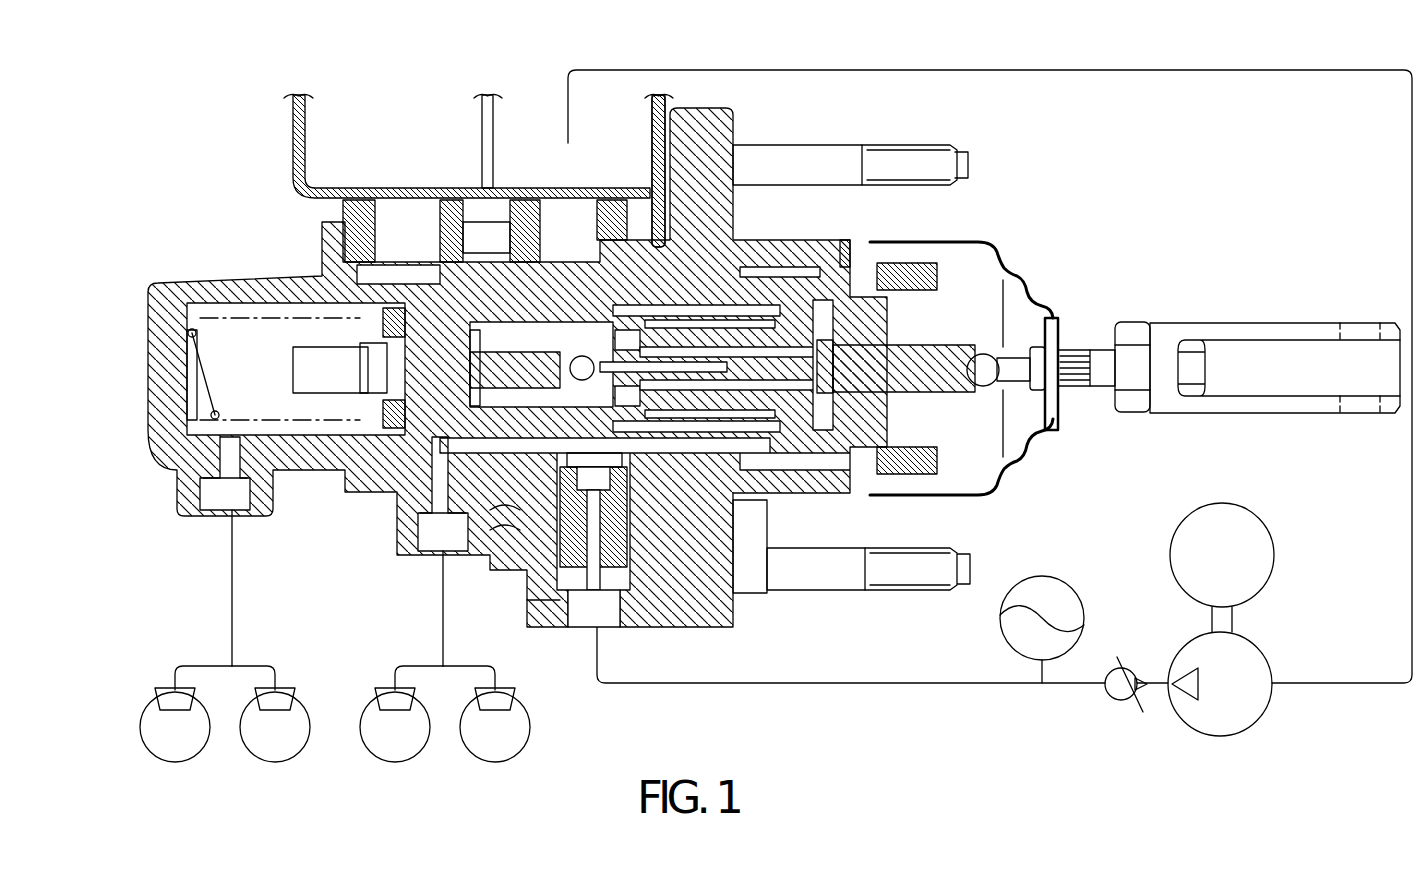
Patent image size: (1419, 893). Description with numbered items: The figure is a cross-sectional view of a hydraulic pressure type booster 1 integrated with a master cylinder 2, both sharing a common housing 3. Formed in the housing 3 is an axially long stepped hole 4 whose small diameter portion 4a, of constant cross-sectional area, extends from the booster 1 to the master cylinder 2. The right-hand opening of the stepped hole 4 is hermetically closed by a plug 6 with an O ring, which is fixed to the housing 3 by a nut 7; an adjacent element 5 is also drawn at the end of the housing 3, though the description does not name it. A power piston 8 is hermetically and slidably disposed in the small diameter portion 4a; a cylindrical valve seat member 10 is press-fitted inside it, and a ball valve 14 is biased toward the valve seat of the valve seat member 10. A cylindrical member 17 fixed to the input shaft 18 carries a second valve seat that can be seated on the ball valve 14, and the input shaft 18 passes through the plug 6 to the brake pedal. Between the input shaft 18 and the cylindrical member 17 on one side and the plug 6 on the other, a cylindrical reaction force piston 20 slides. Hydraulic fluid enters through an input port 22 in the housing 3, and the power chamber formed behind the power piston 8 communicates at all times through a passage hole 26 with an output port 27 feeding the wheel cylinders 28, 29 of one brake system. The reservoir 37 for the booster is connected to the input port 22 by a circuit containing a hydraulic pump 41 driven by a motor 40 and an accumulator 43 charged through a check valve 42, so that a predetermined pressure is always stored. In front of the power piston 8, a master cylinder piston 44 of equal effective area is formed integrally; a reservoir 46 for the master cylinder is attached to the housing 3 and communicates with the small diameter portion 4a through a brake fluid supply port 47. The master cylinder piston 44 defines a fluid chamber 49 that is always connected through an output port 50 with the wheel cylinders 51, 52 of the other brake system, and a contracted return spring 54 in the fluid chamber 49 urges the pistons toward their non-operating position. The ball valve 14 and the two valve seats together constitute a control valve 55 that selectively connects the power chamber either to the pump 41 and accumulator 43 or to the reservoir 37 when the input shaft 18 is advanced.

The hydraulic pressure type booster 1 is at (1032, 157).
The master cylinder 2 is at (300, 270).
The housing 3 is at (765, 260).
The stepped hole 4 is at (830, 486).
The small diameter portion 4a is at (505, 503).
The seal ring 5 is at (845, 268).
The plug 6 is at (880, 275).
The nut 7 is at (940, 482).
The power piston 8 is at (770, 305).
The valve seat member 10 is at (610, 308).
The ball valve 14 is at (583, 310).
The cylindrical member 17 is at (678, 580).
The input shaft 18 is at (970, 384).
The reaction force piston 20 is at (830, 310).
The input port 22 is at (605, 620).
The passage hole 26 is at (745, 470).
The output port 27 is at (432, 540).
The wheel cylinder 28 is at (392, 690).
The wheel cylinder 29 is at (502, 690).
The reservoir 37 is at (535, 105).
The motor 40 is at (1262, 545).
The hydraulic pump 41 is at (1255, 700).
The check valve 42 is at (1118, 701).
The accumulator 43 is at (1062, 600).
The master cylinder piston 44 is at (395, 425).
The reservoir 46 is at (380, 105).
The brake fluid supply port 47 is at (437, 285).
The fluid chamber 49 is at (225, 345).
The output port 50 is at (232, 500).
The wheel cylinder 51 is at (170, 688).
The wheel cylinder 52 is at (280, 690).
The return spring 54 is at (200, 405).
The control valve 55 is at (580, 632).